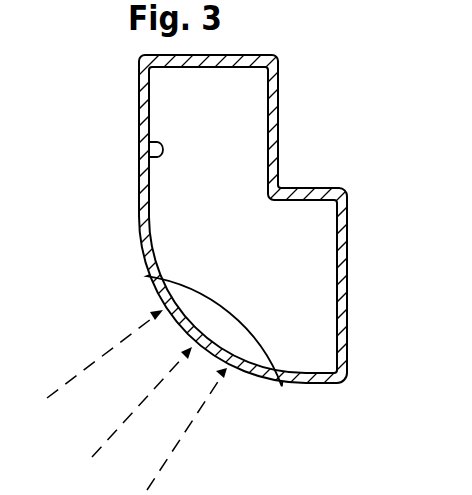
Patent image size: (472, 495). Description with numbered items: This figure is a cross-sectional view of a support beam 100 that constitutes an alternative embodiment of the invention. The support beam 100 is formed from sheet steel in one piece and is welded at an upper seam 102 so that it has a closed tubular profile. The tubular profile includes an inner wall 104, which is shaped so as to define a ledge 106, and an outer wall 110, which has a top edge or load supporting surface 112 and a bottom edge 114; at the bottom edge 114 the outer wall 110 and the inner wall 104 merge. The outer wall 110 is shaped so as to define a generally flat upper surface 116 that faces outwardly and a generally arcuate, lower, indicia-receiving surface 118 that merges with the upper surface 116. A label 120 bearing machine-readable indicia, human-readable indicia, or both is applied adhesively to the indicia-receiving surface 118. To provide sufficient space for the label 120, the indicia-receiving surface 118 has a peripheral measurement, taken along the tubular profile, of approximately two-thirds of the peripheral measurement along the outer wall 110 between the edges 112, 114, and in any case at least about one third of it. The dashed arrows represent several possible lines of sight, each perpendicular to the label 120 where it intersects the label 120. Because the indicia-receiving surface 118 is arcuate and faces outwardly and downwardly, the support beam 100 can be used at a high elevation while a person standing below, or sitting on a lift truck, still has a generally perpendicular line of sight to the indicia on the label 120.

The support beam 100 is at (131, 121).
The upper seam 102 is at (208, 56).
The inner wall 104 is at (342, 275).
The ledge 106 is at (293, 174).
The outer wall 110 is at (139, 138).
The top edge or load supporting surface 112 is at (146, 57).
The bottom edge 114 is at (328, 384).
The upper surface 116 is at (139, 182).
The indicia-receiving surface 118 is at (182, 327).
The label 120 is at (212, 355).